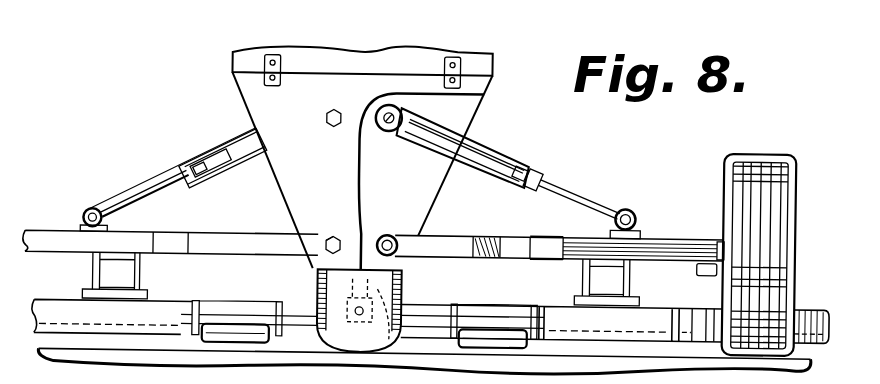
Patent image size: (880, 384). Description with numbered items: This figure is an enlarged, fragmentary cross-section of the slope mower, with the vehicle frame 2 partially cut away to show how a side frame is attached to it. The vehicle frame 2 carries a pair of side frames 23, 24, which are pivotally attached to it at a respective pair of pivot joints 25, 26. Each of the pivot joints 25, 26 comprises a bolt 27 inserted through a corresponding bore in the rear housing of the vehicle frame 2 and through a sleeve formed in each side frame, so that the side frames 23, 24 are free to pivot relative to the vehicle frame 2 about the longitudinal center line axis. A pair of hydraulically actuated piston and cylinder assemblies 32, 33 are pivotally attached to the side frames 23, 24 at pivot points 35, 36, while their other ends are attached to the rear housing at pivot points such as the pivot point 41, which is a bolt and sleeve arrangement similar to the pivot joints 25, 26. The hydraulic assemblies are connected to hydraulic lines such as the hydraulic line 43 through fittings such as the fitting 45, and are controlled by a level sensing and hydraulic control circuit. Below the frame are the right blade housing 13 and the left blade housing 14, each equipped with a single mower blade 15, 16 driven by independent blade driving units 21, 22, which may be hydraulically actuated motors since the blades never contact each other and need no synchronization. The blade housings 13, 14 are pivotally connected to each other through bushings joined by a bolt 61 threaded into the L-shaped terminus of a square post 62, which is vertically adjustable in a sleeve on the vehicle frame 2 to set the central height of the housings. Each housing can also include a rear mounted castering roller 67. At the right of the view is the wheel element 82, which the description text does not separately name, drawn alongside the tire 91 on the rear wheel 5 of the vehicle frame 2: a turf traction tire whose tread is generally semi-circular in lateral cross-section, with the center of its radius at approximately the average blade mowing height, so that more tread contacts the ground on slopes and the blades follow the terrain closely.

The vehicle frame 2 is at (490, 60).
The rear wheel 5 is at (403, 288).
The right blade housing 13 is at (710, 311).
The left blade housing 14 is at (60, 309).
The mower blade 15 is at (612, 329).
The mower blade 16 is at (124, 327).
The blade driving unit 21 is at (631, 280).
The blade driving unit 22 is at (141, 281).
The side frame 23 is at (514, 236).
The side frame 24 is at (232, 240).
The pivot joint 25 is at (388, 236).
The pivot joint 26 is at (330, 239).
The bolt 27 is at (327, 127).
The hydraulically actuated piston and cylinder assembly 32 is at (505, 160).
The hydraulically actuated piston and cylinder assembly 33 is at (222, 155).
The pivot point 35 is at (627, 207).
The pivot point 36 is at (92, 212).
The pivot point 41 is at (390, 132).
The hydraulic line 43 is at (495, 178).
The fitting 45 is at (532, 172).
The bolt 61 is at (357, 325).
The square post 62 is at (378, 330).
The castering roller 67 is at (250, 327).
The wheel 82 is at (795, 199).
The tire 91 is at (318, 288).